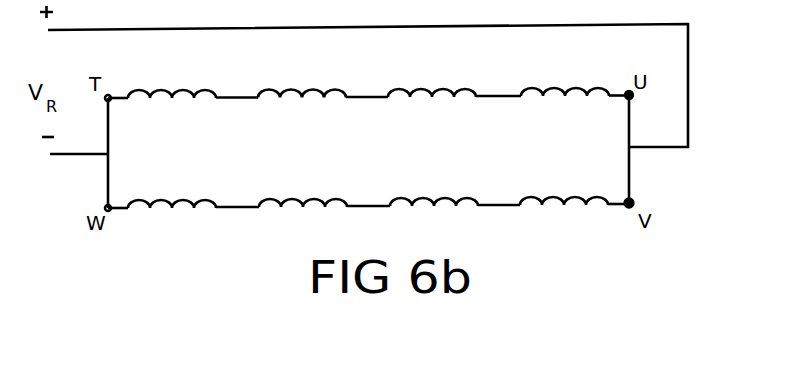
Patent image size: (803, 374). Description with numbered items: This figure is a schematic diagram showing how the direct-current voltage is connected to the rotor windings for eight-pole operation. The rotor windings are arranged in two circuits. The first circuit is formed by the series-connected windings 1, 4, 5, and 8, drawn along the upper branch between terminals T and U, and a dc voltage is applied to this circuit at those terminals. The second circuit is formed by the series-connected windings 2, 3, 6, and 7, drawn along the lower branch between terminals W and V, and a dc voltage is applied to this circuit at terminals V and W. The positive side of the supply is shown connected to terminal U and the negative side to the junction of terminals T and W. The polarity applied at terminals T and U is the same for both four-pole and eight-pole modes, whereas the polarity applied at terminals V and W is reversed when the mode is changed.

The winding 1 is at (172, 109).
The winding 2 is at (172, 218).
The winding 3 is at (303, 218).
The winding 4 is at (302, 109).
The winding 5 is at (432, 107).
The winding 6 is at (434, 216).
The winding 7 is at (564, 215).
The winding 8 is at (565, 107).